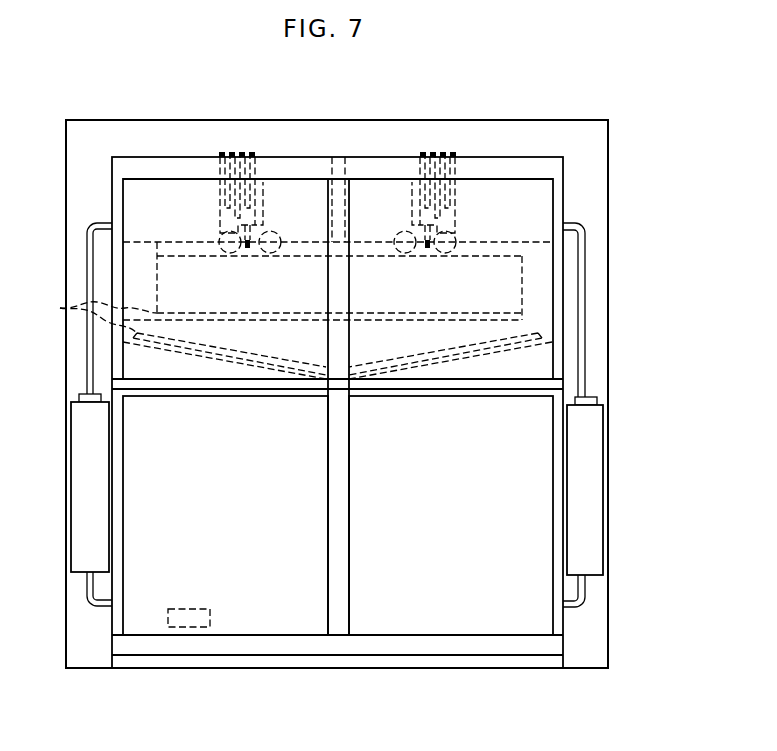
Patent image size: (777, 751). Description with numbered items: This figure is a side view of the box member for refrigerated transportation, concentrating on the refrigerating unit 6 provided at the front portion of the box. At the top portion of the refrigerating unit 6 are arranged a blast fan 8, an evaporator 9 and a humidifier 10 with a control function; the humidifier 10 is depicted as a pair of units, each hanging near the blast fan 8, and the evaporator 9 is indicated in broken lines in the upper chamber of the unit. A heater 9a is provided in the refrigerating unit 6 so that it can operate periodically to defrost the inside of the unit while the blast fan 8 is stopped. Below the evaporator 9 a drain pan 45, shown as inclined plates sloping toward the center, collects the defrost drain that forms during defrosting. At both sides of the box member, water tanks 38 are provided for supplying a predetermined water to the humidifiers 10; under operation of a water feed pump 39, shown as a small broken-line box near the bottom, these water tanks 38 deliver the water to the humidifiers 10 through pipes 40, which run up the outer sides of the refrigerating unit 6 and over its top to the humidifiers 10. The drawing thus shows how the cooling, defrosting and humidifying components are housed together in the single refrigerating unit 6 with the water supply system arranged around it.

The refrigerating unit 6 is at (315, 627).
The blast fan 8 is at (460, 242).
The evaporator 9 is at (522, 300).
The heater 9a is at (94, 315).
The humidifier 10 is at (222, 226).
The water tank 38 is at (72, 518).
The water feed pump 39 is at (183, 627).
The pipe 40 is at (87, 352).
The drain pan 45 is at (482, 355).